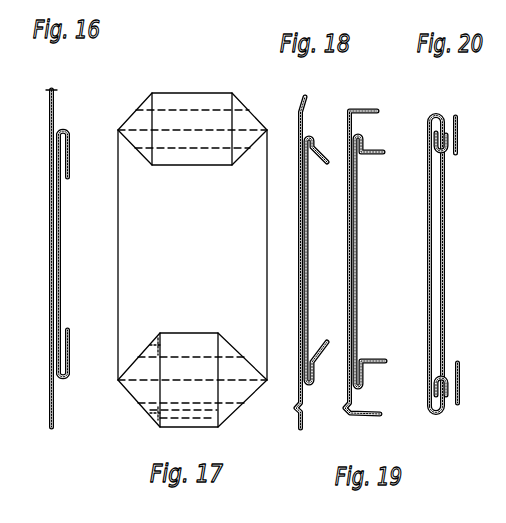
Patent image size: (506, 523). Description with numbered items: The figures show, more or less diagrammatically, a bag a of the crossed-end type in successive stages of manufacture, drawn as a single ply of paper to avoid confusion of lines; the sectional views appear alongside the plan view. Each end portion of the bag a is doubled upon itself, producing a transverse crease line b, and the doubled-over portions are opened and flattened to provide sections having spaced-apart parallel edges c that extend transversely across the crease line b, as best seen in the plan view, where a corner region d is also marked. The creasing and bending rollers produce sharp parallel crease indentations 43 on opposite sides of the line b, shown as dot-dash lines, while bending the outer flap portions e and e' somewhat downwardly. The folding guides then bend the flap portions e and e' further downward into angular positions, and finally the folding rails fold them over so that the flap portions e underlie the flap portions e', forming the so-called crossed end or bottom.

In FIG. 17, the bag a is at (192, 255).
In FIG. 17, the transverse crease line b is at (131, 128).
In FIG. 17, the spaced-apart parallel edges c is at (155, 100).
In FIG. 17, the corner tuck d is at (153, 345).
In FIG. 17, the crease indentations 43 is at (232, 113).
In FIG. 18, the flap portion e is at (316, 260).
In FIG. 19, the flap portion e is at (381, 261).
In FIG. 20, the flap portion e is at (454, 249).
In FIG. 18, the flap portion e' is at (313, 263).
In FIG. 19, the flap portion e' is at (375, 262).
In FIG. 20, the flap portion e' is at (453, 278).